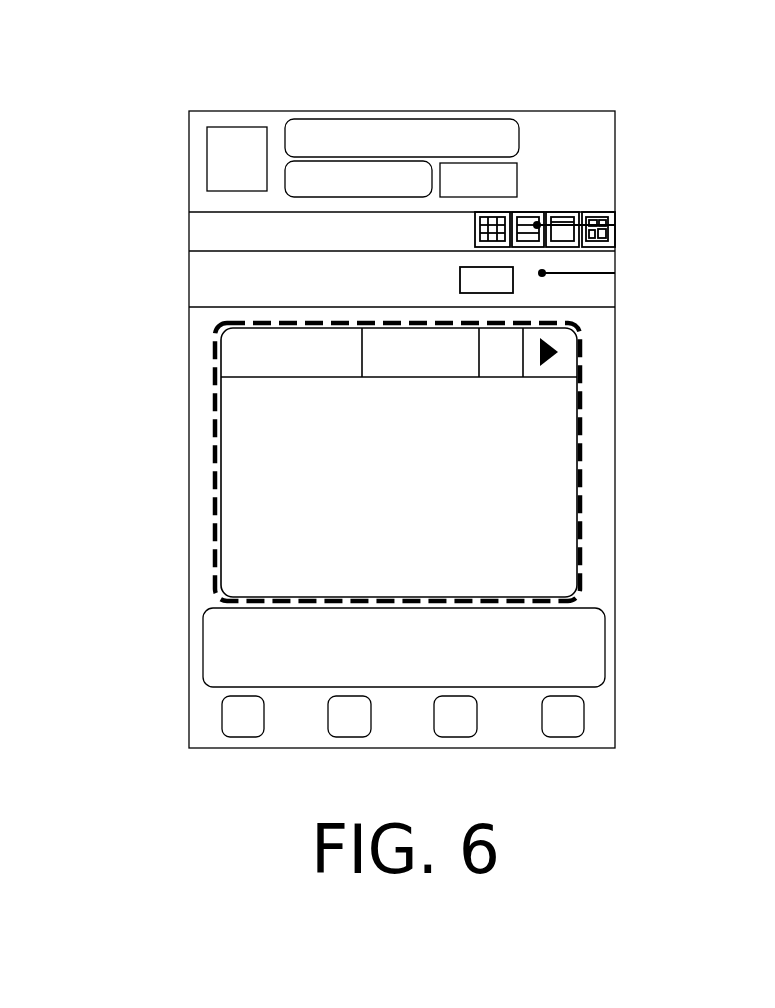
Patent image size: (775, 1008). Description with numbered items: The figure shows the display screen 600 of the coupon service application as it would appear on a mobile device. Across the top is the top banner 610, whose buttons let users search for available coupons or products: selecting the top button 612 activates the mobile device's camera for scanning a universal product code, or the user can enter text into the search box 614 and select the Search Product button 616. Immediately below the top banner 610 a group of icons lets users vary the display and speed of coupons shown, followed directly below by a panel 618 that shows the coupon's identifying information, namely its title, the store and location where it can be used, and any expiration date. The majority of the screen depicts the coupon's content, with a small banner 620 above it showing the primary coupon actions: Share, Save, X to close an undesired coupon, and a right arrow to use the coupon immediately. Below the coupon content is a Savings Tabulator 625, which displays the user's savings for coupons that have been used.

The display screen 600 is at (578, 110).
The top banner 610 is at (233, 153).
The top button 612 is at (318, 129).
The search box 614 is at (330, 175).
The Search Product button 616 is at (447, 165).
The panel 618 is at (215, 279).
The small banner 620 is at (548, 367).
The Savings Tabulator 625 is at (548, 622).